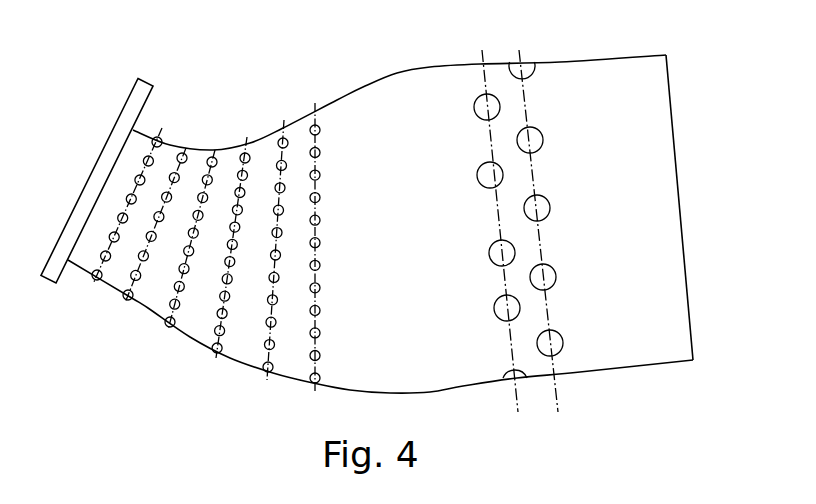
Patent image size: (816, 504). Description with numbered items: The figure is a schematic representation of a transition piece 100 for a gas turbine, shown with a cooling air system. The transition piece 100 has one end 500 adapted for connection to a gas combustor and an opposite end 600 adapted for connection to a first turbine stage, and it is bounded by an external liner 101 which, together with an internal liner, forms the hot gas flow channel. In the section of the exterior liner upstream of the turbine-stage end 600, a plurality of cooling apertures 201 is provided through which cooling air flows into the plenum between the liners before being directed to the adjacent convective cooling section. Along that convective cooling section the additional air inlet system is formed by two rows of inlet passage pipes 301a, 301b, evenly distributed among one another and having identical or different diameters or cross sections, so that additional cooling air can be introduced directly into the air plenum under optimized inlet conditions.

The transition piece 100 is at (340, 84).
The external liner 101 is at (641, 204).
The cooling apertures 201 is at (230, 358).
The first row of inlet passage pipes 301a is at (495, 308).
The second row of inlet passage pipes 301b is at (563, 340).
The end adapted for connection to a gas combustor 500 is at (675, 147).
The end adapted for connection to a first turbine stage 600 is at (108, 130).